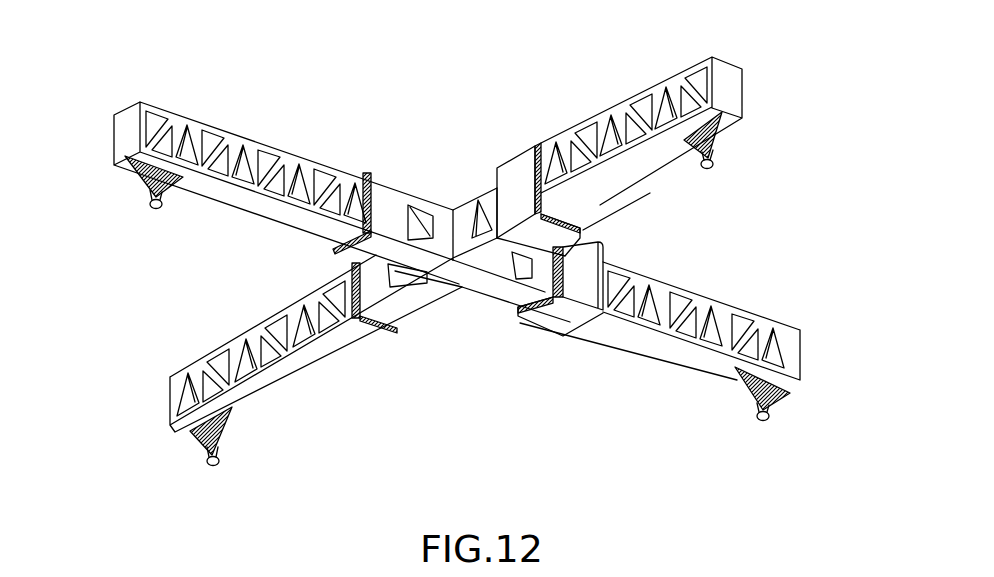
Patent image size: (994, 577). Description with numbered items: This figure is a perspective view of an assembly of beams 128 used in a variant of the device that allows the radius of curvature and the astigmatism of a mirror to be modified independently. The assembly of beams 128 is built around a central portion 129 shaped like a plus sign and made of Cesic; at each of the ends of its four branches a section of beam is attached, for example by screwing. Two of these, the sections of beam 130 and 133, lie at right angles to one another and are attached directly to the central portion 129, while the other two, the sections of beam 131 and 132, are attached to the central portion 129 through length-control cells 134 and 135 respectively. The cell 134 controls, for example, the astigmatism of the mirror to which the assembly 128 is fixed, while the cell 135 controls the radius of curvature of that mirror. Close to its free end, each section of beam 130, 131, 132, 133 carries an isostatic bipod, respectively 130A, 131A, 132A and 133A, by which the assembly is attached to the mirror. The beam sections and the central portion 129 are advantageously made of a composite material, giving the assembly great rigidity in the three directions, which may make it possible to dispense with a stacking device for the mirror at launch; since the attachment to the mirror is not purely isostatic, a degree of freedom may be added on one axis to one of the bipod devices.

The assembly of beams 128 is at (130, 286).
The central portion 129 is at (430, 303).
The section of beam 130 is at (224, 124).
The section of beam 131 is at (728, 305).
The section of beam 132 is at (683, 72).
The section of beam 133 is at (284, 390).
The length-control cell 134 is at (530, 336).
The length-control cell 135 is at (510, 168).
The isostatic bipod 130A is at (142, 185).
The isostatic bipod 131A is at (789, 403).
The isostatic bipod 132A is at (720, 143).
The isostatic bipod 133A is at (207, 450).